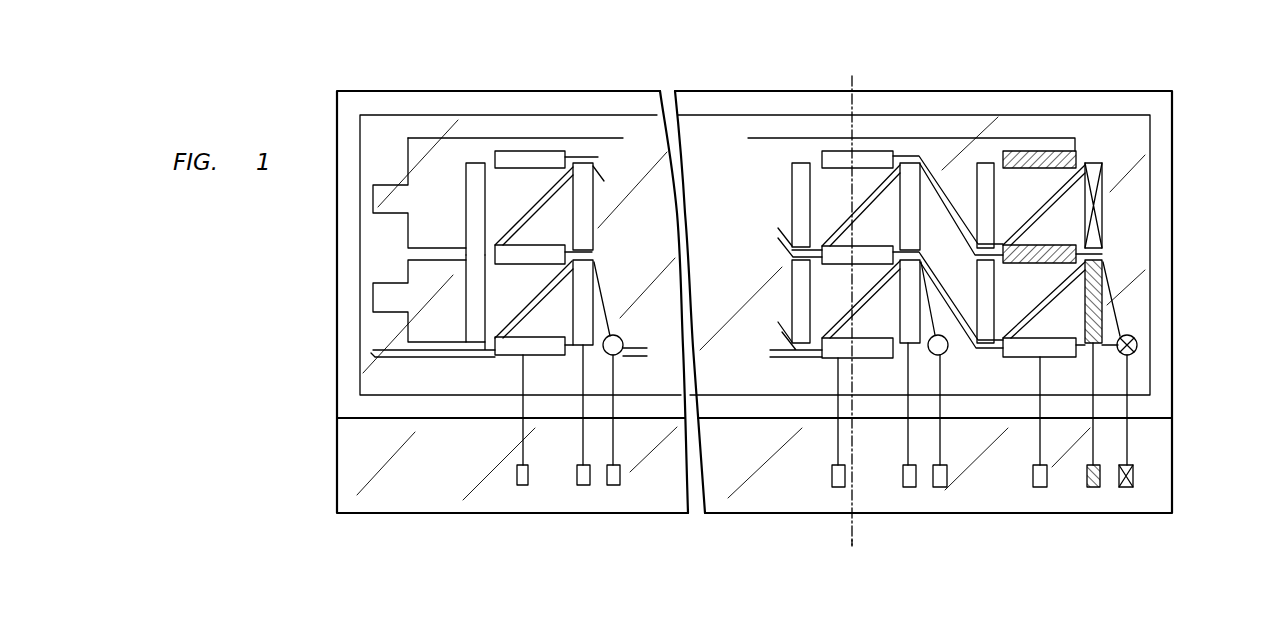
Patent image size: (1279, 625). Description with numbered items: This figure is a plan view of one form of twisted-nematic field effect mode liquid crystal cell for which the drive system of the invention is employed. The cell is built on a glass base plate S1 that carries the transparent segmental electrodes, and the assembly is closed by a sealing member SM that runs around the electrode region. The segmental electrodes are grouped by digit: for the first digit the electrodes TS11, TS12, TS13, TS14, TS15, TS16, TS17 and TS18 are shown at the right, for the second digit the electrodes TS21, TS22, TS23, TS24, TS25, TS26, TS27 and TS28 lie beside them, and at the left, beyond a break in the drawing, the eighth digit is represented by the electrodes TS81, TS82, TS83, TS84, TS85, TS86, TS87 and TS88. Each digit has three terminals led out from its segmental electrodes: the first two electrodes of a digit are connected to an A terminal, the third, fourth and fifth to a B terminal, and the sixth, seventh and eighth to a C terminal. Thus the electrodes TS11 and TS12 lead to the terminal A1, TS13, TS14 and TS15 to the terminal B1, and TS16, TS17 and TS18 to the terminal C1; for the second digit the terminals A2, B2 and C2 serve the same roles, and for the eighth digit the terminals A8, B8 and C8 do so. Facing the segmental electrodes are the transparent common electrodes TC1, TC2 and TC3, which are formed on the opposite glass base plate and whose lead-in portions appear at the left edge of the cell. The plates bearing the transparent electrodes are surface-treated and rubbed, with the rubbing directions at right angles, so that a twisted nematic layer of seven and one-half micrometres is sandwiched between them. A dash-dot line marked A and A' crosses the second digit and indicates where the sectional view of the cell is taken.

The glass base plate S1 is at (340, 468).
The sealing member SM is at (377, 410).
The transparent common electrode TC1 is at (376, 196).
The transparent common electrode TC2 is at (376, 297).
The transparent common electrode TC3 is at (376, 354).
The transparent segmental electrode TS86 is at (470, 193).
The transparent segmental electrode TS87 is at (473, 315).
The transparent segmental electrode TS83 is at (515, 157).
The transparent segmental electrode TS84 is at (510, 252).
The transparent segmental electrode TS88 is at (510, 347).
The transparent segmental electrode TS81 is at (580, 170).
The transparent segmental electrode TS85 is at (578, 337).
The transparent segmental electrode TS82 is at (621, 354).
The terminal C8 is at (523, 485).
The terminal B8 is at (583, 485).
The terminal A8 is at (613, 485).
The transparent segmental electrode TS26 is at (795, 192).
The transparent segmental electrode TS27 is at (797, 318).
The transparent segmental electrode TS23 is at (837, 155).
The transparent segmental electrode TS24 is at (835, 248).
The transparent segmental electrode TS28 is at (830, 350).
The transparent segmental electrode TS21 is at (908, 172).
The transparent segmental electrode TS25 is at (907, 332).
The transparent segmental electrode TS22 is at (930, 355).
The transparent segmental electrode TS16 is at (982, 195).
The transparent segmental electrode TS17 is at (985, 338).
The transparent segmental electrode TS13 is at (1053, 150).
The transparent segmental electrode TS14 is at (1015, 252).
The transparent segmental electrode TS18 is at (1022, 348).
The transparent segmental electrode TS11 is at (1094, 185).
The transparent segmental electrode TS15 is at (1105, 288).
The transparent segmental electrode TS12 is at (1133, 358).
The terminal C2 is at (838, 487).
The terminal B2 is at (908, 487).
The terminal A2 is at (940, 487).
The terminal C1 is at (1040, 487).
The terminal B1 is at (1093, 487).
The terminal A1 is at (1127, 487).
The section line end A is at (859, 300).
The section line end A' is at (852, 554).